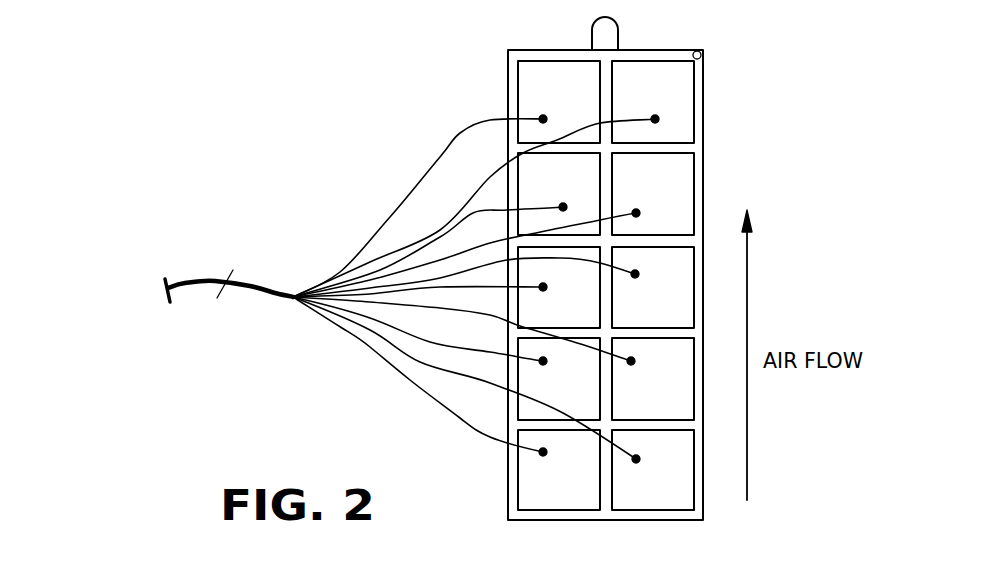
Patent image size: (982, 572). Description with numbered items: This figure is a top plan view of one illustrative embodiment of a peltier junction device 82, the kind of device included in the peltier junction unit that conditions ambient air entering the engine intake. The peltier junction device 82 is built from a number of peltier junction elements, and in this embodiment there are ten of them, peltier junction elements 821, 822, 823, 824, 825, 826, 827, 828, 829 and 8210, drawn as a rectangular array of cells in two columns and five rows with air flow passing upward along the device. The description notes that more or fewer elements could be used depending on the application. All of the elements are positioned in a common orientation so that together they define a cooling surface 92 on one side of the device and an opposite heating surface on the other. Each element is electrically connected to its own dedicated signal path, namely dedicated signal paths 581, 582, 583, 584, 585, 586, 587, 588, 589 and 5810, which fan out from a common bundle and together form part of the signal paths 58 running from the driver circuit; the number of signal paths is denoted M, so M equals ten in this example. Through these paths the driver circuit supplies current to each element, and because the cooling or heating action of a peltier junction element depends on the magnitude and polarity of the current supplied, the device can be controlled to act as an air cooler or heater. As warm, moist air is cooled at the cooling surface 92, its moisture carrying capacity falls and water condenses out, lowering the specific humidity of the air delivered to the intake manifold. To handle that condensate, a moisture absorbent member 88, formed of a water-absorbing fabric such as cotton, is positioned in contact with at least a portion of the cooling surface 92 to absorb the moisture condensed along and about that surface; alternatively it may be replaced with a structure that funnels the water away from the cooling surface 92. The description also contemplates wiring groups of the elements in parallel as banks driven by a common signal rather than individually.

The peltier junction device 82 is at (764, 130).
The peltier junction element 821 is at (588, 101).
The peltier junction element 822 is at (680, 101).
The peltier junction element 823 is at (588, 193).
The peltier junction element 824 is at (680, 193).
The peltier junction element 825 is at (588, 318).
The peltier junction element 826 is at (680, 318).
The peltier junction element 827 is at (588, 408).
The peltier junction element 828 is at (680, 408).
The peltier junction element 829 is at (588, 502).
The peltier junction element 8210 is at (684, 500).
The moisture absorbent member 88 is at (590, 33).
The cooling surface 92 is at (705, 48).
The signal paths 58 is at (193, 282).
The number of signal paths M is at (220, 278).
The dedicated signal path 581 is at (462, 133).
The dedicated signal path 582 is at (467, 195).
The dedicated signal path 583 is at (458, 226).
The dedicated signal path 584 is at (433, 262).
The dedicated signal path 585 is at (373, 298).
The dedicated signal path 586 is at (416, 280).
The dedicated signal path 587 is at (397, 330).
The dedicated signal path 588 is at (441, 309).
The dedicated signal path 589 is at (480, 434).
The dedicated signal path 5810 is at (482, 386).